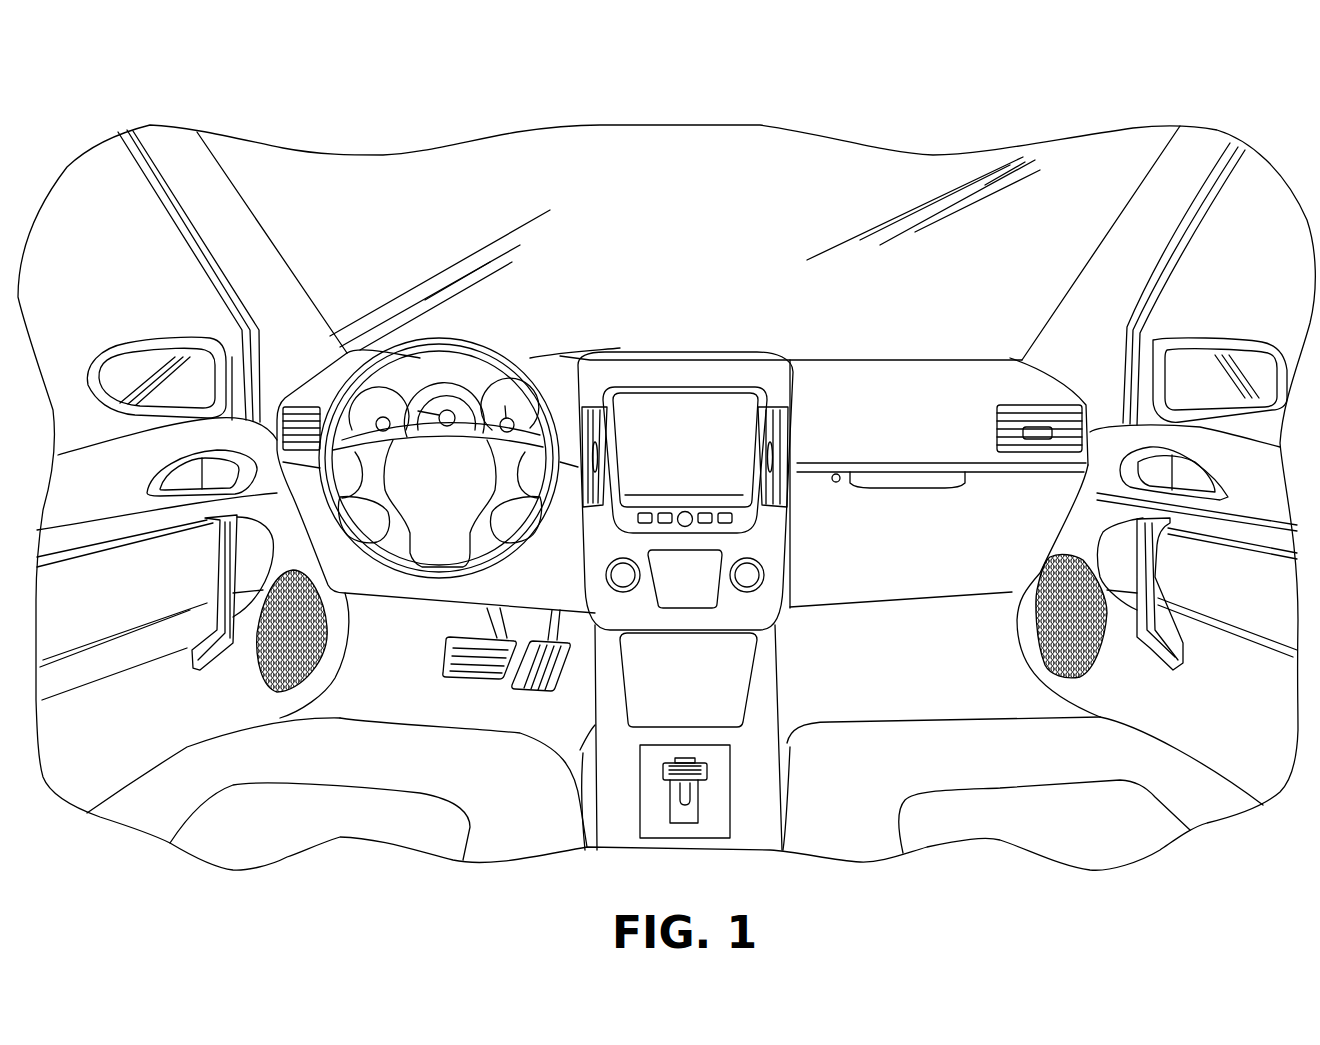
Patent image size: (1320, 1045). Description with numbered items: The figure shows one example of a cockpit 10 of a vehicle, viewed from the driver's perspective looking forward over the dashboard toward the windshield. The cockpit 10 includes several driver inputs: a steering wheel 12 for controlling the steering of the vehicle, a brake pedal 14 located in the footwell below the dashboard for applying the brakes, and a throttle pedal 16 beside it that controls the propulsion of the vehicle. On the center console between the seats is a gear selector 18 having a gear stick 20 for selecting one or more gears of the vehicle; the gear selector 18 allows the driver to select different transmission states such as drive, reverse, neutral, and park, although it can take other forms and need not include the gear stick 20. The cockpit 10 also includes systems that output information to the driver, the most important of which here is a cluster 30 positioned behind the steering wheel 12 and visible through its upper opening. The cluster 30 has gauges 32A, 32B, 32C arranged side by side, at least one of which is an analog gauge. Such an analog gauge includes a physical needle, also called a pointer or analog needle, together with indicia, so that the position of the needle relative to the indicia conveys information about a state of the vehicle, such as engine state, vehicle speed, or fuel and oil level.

The cockpit 10 is at (968, 100).
The steering wheel 12 is at (410, 342).
The brake pedal 14 is at (447, 658).
The throttle pedal 16 is at (525, 683).
The gear selector 18 is at (653, 797).
The gear stick 20 is at (707, 773).
The cluster 30 is at (440, 400).
The gauge 32A is at (388, 407).
The gauge 32B is at (457, 402).
The gauge 32C is at (517, 408).